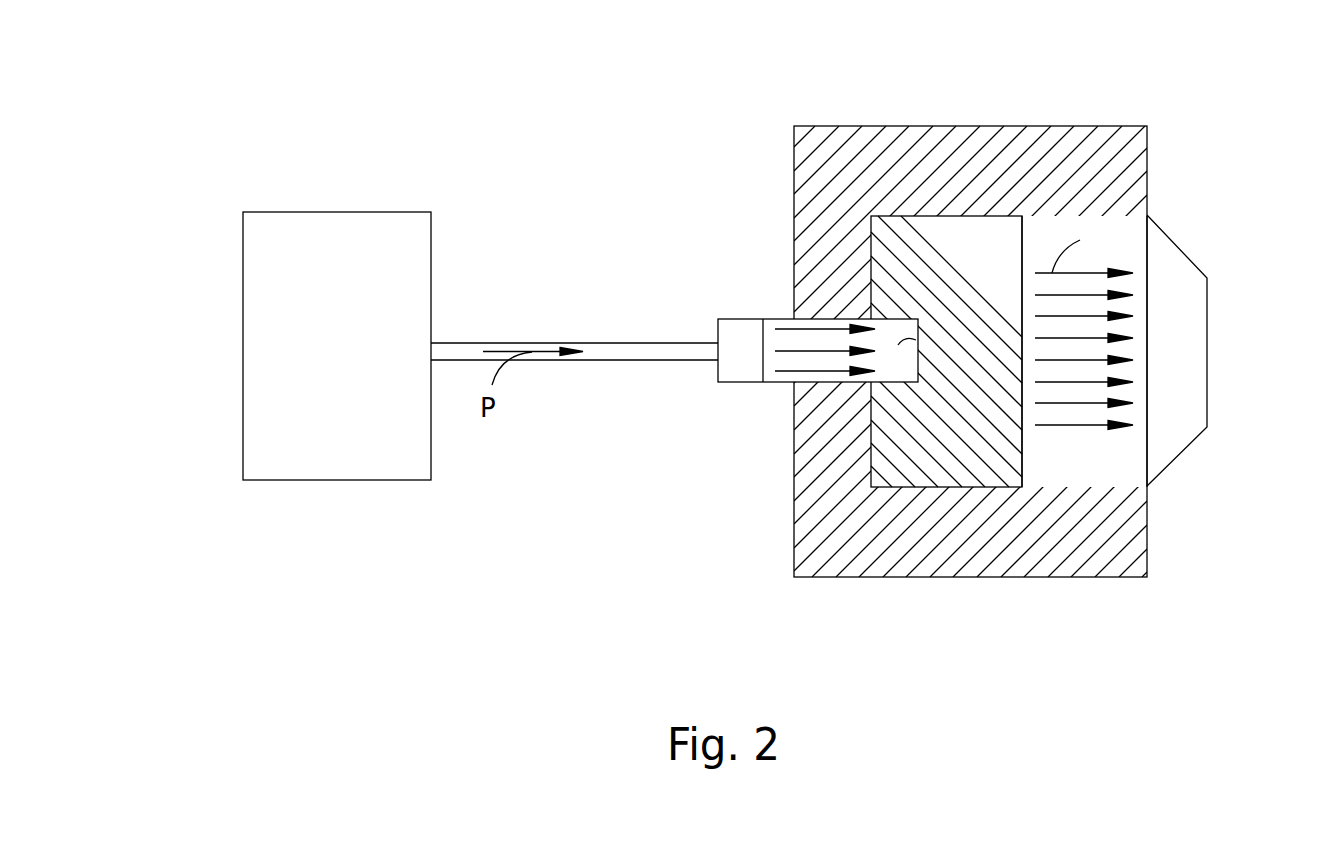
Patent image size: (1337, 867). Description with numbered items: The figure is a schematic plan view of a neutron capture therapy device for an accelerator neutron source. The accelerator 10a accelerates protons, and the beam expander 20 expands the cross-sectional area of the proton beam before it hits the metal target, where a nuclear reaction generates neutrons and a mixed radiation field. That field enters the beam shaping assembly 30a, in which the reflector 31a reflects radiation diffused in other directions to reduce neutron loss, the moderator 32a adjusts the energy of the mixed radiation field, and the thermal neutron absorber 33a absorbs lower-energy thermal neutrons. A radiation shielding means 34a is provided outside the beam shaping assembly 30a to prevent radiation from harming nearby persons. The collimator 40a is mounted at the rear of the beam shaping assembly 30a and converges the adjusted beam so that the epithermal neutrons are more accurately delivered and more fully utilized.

The accelerator 10a is at (273, 428).
The beam expander 20 is at (718, 370).
The beam shaping assembly 30a is at (1004, 314).
The reflector 31a is at (810, 147).
The moderator 32a is at (900, 464).
The thermal neutron absorber 33a is at (1023, 452).
The radiation shielding means 34a is at (1147, 170).
The collimator 40a is at (1172, 422).